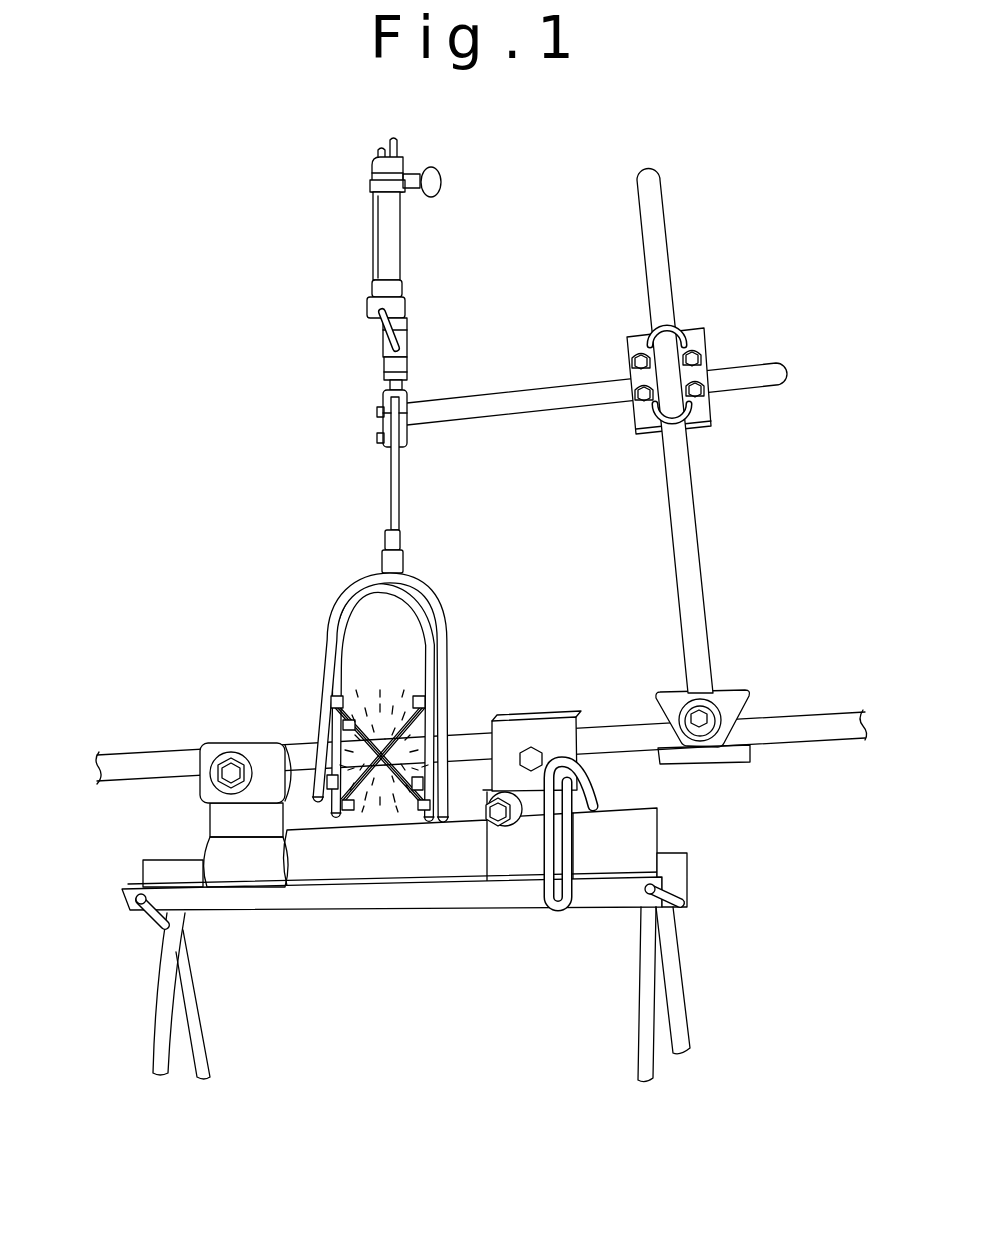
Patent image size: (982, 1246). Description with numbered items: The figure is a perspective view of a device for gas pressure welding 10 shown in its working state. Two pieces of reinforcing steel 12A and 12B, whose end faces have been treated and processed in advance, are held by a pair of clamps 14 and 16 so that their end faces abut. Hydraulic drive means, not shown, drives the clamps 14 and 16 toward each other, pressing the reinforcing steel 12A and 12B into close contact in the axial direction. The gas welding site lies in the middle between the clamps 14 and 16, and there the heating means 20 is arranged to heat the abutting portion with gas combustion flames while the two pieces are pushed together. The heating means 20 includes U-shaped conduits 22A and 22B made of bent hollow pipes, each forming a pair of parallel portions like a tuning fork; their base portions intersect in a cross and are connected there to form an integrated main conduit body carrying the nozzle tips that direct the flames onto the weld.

The device for gas pressure welding 10 is at (238, 544).
The reinforcing steel 12A is at (127, 762).
The reinforcing steel 12B is at (815, 722).
The clamp 14 is at (223, 750).
The clamp 16 is at (560, 732).
The heating means 20 is at (462, 641).
The U-shaped conduit 22A is at (430, 604).
The U-shaped conduit 22B is at (353, 595).